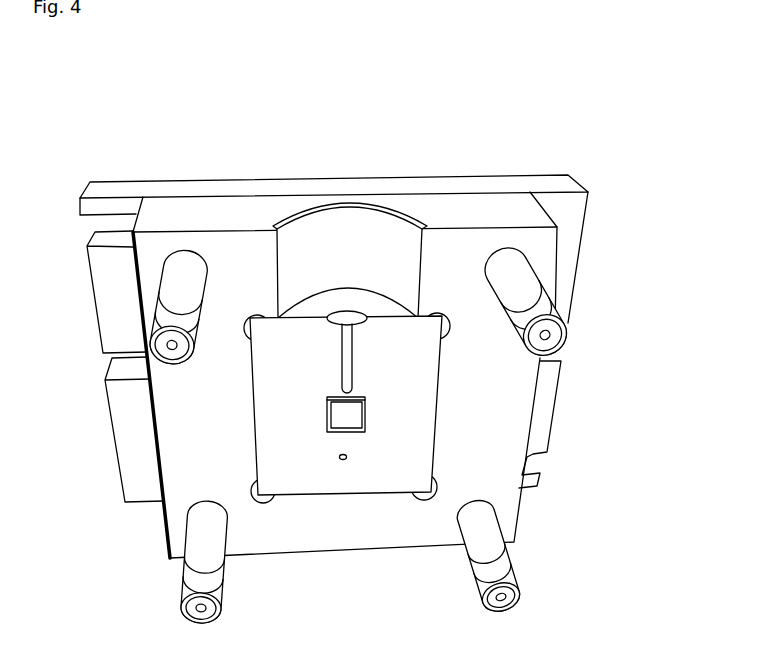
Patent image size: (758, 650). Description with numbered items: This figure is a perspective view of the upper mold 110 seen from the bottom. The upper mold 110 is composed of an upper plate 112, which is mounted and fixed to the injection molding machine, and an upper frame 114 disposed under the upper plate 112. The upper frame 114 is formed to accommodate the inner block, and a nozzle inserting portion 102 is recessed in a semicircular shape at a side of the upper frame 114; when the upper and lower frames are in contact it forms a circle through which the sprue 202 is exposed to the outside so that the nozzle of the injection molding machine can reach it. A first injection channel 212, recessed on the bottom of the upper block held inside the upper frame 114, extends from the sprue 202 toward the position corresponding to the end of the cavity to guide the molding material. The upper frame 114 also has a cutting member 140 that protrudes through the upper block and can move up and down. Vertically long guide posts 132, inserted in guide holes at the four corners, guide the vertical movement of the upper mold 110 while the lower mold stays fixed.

The upper mold 110 is at (346, 291).
The upper plate 112 is at (568, 204).
The upper frame 114 is at (458, 248).
The nozzle inserting portion 102 is at (328, 233).
The sprue 202 is at (348, 312).
The first injection channel 212 is at (248, 369).
The cutting member 140 is at (345, 420).
The guide posts 132 is at (168, 347).